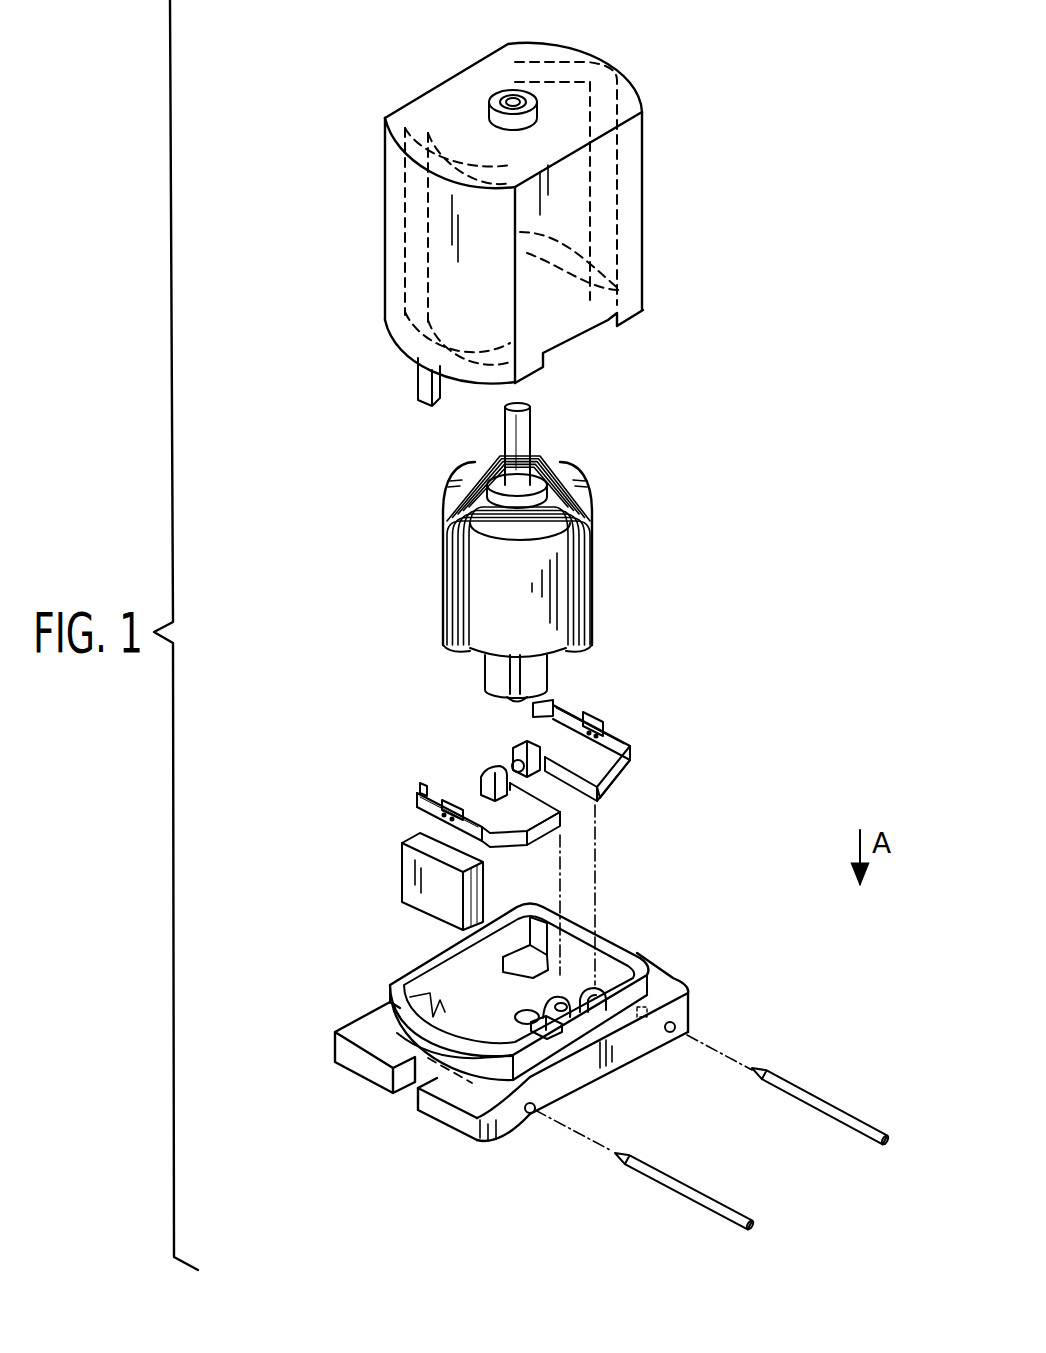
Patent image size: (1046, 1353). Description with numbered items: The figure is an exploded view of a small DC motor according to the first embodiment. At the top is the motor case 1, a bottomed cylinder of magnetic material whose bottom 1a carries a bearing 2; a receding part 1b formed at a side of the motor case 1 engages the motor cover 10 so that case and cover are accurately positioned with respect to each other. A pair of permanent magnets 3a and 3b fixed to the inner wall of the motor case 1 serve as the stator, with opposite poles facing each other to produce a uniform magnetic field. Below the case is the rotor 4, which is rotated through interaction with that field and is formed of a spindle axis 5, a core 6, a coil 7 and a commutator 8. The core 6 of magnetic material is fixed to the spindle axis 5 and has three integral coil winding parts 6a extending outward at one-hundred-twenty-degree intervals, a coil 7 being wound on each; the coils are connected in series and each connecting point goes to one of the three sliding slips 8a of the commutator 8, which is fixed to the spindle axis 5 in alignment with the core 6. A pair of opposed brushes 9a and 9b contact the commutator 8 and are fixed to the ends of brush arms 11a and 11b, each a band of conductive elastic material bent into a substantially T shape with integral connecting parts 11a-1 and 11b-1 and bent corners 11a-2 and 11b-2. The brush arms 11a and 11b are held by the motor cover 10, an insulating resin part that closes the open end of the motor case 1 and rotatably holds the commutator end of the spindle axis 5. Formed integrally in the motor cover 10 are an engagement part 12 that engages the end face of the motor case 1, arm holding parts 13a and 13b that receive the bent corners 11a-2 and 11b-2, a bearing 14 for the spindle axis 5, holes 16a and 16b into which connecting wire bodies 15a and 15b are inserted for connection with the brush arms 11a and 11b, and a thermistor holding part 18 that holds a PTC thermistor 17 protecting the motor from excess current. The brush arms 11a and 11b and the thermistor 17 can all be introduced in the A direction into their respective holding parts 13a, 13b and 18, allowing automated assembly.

The motor case 1 is at (525, 212).
The bottom 1a is at (475, 77).
The receding part 1b is at (583, 332).
The bearing 2 is at (540, 100).
The permanent magnet 3a is at (400, 245).
The permanent magnet 3b is at (620, 258).
The rotor 4 is at (523, 550).
The spindle axis 5 is at (520, 430).
The core 6 is at (445, 476).
The coil winding part 6a is at (447, 502).
The coil 7 is at (490, 458).
The commutator 8 is at (523, 670).
The sliding slip 8a is at (497, 675).
The brush 9a is at (483, 777).
The brush 9b is at (513, 753).
The motor cover 10 is at (533, 1041).
The brush arm 11a is at (495, 819).
The connecting part 11a-1 is at (425, 788).
The bent corner 11a-2 is at (560, 838).
The brush arm 11b is at (651, 755).
The connecting part 11b-1 is at (600, 720).
The bent corner 11b-2 is at (602, 793).
The engagement part 12 is at (390, 1003).
The arm holding part 13a is at (552, 1030).
The arm holding part 13b is at (603, 1000).
The bearing 14 is at (513, 1013).
The connecting wire body 15a is at (677, 1187).
The connecting wire body 15b is at (810, 1093).
The hole 16a is at (467, 1087).
The hole 16b is at (703, 990).
The thermistor (PTC) 17 is at (402, 877).
The thermistor holding part 18 is at (460, 1027).